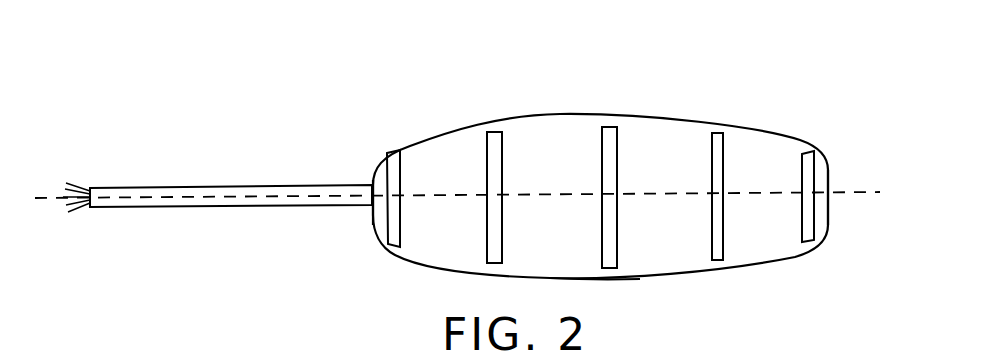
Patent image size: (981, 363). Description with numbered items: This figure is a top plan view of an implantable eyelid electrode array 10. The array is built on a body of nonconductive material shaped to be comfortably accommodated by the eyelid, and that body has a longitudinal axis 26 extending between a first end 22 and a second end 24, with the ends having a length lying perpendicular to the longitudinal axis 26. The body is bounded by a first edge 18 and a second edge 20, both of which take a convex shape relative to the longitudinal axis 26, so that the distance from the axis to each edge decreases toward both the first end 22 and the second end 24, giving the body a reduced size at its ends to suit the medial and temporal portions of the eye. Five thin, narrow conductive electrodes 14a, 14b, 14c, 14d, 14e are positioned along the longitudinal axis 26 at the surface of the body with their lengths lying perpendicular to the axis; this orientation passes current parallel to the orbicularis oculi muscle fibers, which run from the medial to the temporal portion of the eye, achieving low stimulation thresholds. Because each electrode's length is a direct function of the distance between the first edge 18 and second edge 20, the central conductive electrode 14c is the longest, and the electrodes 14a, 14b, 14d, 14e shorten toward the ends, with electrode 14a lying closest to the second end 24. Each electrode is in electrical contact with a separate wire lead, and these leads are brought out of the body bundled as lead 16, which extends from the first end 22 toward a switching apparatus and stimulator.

The implantable eyelid electrode array 10 is at (748, 54).
The conductive electrode 14a is at (812, 152).
The conductive electrode 14b is at (718, 133).
The conductive electrode 14c is at (608, 127).
The conductive electrode 14d is at (492, 132).
The conductive electrode 14e is at (393, 150).
The lead 16 is at (177, 188).
The first edge 18 is at (552, 115).
The second edge 20 is at (673, 275).
The first end 22 is at (372, 225).
The second end 24 is at (829, 178).
The longitudinal axis 26 is at (847, 196).